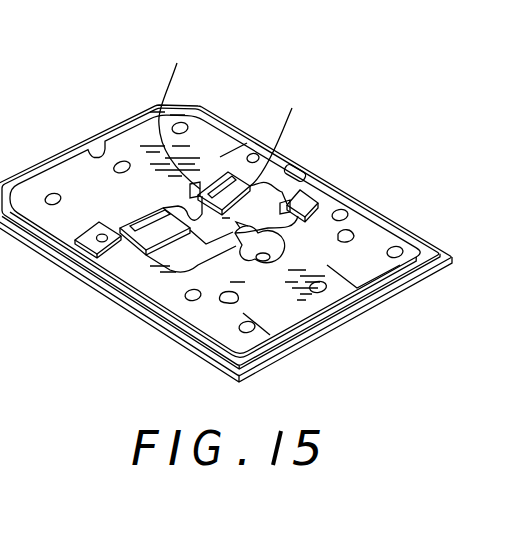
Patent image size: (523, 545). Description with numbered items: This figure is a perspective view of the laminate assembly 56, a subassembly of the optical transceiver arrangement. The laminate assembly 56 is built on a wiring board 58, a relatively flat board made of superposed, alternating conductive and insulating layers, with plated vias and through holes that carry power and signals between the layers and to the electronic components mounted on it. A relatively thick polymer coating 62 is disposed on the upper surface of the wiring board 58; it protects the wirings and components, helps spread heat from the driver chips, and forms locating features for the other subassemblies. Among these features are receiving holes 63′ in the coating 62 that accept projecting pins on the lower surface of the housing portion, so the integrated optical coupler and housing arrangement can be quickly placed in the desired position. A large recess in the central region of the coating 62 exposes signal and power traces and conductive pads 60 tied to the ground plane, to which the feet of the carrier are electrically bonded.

The laminate assembly 56 is at (213, 119).
The wiring board 58 is at (355, 318).
The conductive pads 60 is at (258, 187).
The polymer coating 62 is at (29, 183).
The receiving holes 63′ is at (350, 234).